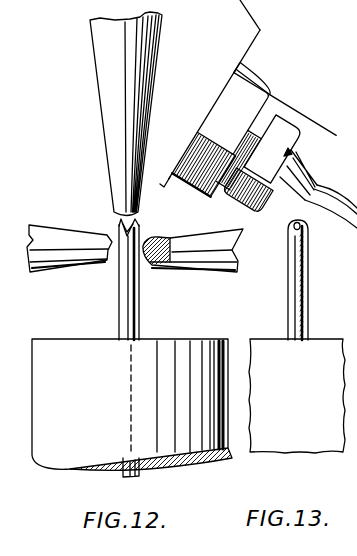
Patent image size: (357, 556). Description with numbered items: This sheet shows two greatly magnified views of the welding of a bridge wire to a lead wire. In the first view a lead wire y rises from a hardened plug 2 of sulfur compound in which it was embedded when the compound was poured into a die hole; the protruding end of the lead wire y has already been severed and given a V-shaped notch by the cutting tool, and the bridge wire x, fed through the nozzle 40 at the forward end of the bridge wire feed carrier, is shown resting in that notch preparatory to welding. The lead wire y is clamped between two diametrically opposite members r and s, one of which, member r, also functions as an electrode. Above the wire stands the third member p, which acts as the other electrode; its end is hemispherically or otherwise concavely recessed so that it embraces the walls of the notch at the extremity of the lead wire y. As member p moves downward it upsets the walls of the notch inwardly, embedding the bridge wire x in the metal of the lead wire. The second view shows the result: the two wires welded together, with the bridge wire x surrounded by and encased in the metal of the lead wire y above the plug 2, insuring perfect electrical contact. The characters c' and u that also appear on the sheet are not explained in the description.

In FIG. 12, the third member p is at (115, 147).
In FIG. 12, the lead wire y is at (140, 297).
In FIG. 13, the lead wire y is at (308, 297).
In FIG. 12, the bridge wire x is at (139, 228).
In FIG. 12, the clamping member r is at (55, 233).
In FIG. 12, the clamping member s is at (189, 237).
In FIG. 12, the plug 2 is at (84, 342).
In FIG. 13, the plug 2 is at (270, 338).
In FIG. 13, the nozzle 40 is at (302, 155).
In FIG. 13, the tube c' is at (329, 10).
In FIG. 13, the fitting u is at (347, 91).